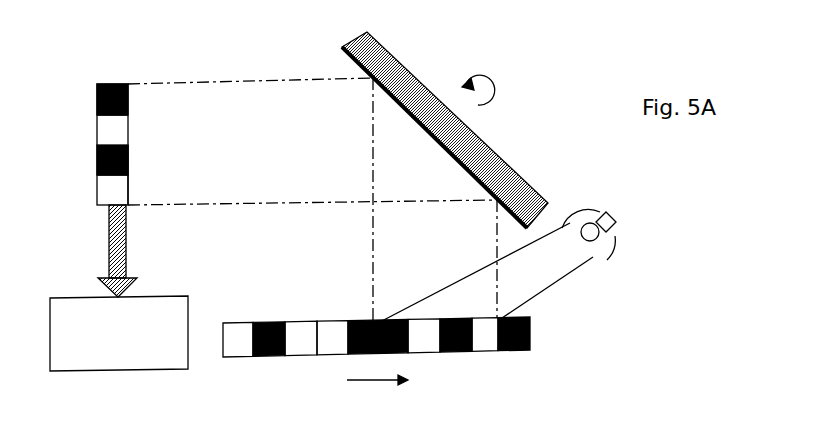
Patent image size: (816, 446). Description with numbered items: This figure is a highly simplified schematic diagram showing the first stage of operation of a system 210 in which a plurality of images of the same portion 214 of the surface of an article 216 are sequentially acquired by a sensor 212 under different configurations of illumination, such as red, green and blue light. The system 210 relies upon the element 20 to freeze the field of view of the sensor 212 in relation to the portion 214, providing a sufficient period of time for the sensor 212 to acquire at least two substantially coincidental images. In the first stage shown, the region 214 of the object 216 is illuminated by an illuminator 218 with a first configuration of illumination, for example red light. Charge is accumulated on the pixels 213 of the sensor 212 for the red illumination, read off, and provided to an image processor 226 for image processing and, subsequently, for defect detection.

The element 20 is at (340, 50).
The system 210 is at (550, 89).
The sensor 212 is at (82, 98).
The pixels 213 is at (128, 202).
The portion 214 is at (434, 273).
The article 216 is at (530, 335).
The illuminator 218 is at (618, 218).
The image processor 226 is at (142, 370).